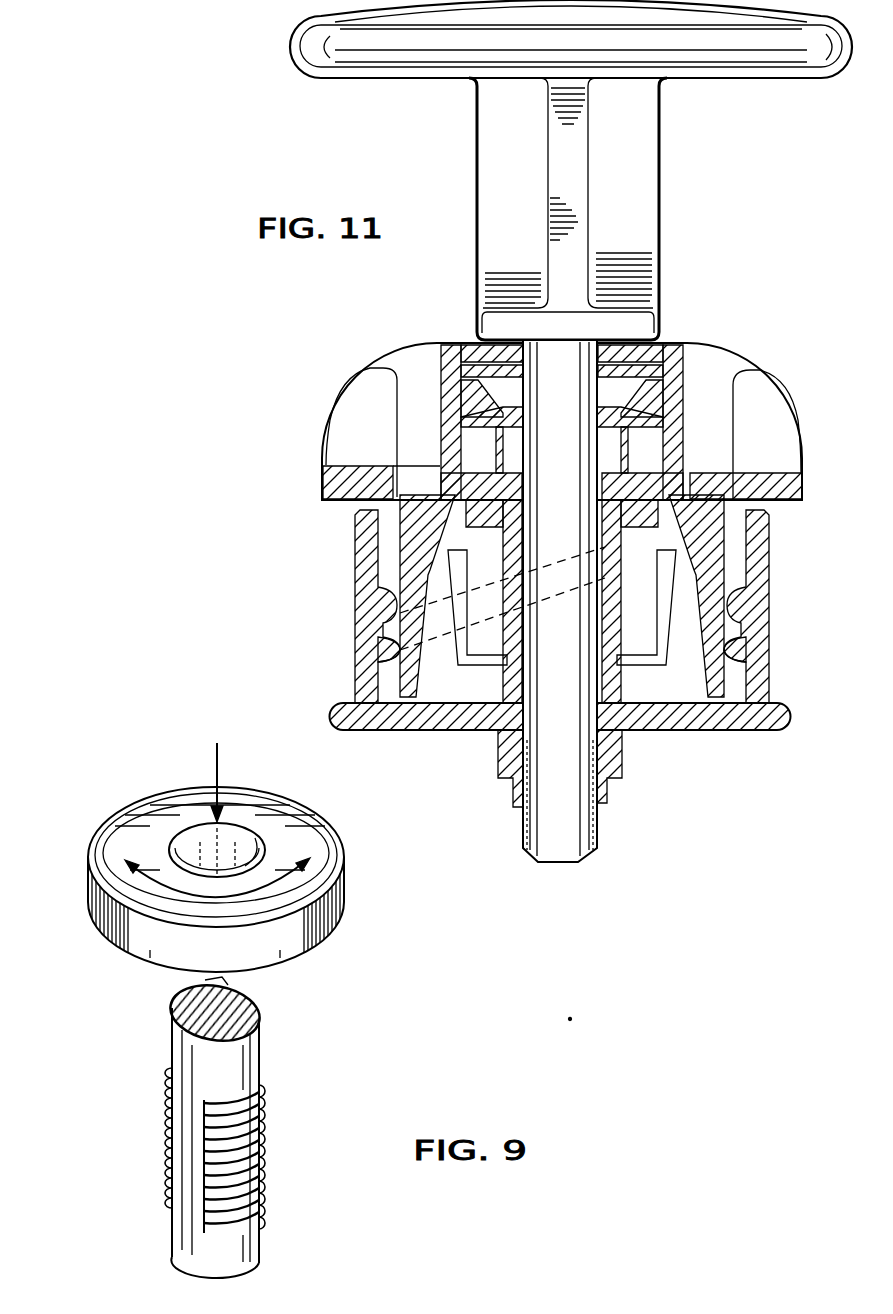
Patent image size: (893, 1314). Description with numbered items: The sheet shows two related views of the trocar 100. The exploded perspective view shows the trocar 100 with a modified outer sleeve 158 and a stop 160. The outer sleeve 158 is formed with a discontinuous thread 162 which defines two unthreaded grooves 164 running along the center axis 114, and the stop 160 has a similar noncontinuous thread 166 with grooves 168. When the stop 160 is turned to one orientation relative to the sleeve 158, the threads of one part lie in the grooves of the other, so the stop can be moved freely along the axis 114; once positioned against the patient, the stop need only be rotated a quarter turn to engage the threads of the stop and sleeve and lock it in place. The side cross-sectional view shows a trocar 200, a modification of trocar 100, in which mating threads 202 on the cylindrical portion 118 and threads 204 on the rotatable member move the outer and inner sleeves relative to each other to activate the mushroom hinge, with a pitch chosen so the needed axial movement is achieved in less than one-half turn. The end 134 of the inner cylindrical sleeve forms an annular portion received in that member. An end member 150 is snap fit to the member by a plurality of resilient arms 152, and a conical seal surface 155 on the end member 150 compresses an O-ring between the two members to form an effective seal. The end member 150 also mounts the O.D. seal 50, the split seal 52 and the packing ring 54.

In FIG. 11, the trocar 200 is at (312, 408).
In FIG. 11, the end member 150 is at (792, 393).
In FIG. 11, the conical seal surface 155 is at (457, 487).
In FIG. 11, the O.D. seal 50 is at (500, 395).
In FIG. 11, the split seal 52 is at (645, 428).
In FIG. 11, the packing ring 54 is at (662, 380).
In FIG. 11, the resilient arms 152 is at (700, 535).
In FIG. 11, the mating threads 202 is at (733, 608).
In FIG. 11, the threads 204 is at (728, 640).
In FIG. 11, the cylindrical portion 118 is at (664, 742).
In FIG. 11, the end of inner cylindrical sleeve 134 is at (622, 808).
In FIG. 9, the stop 160 is at (162, 948).
In FIG. 9, the grooves 168 is at (190, 835).
In FIG. 9, the noncontinuous thread 166 is at (250, 832).
In FIG. 9, the center axis 114 is at (216, 982).
In FIG. 9, the trocar 100 is at (180, 1128).
In FIG. 9, the outer sleeve 158 is at (160, 1230).
In FIG. 9, the unthreaded grooves 164 is at (168, 1170).
In FIG. 9, the discontinuous thread 162 is at (258, 1172).